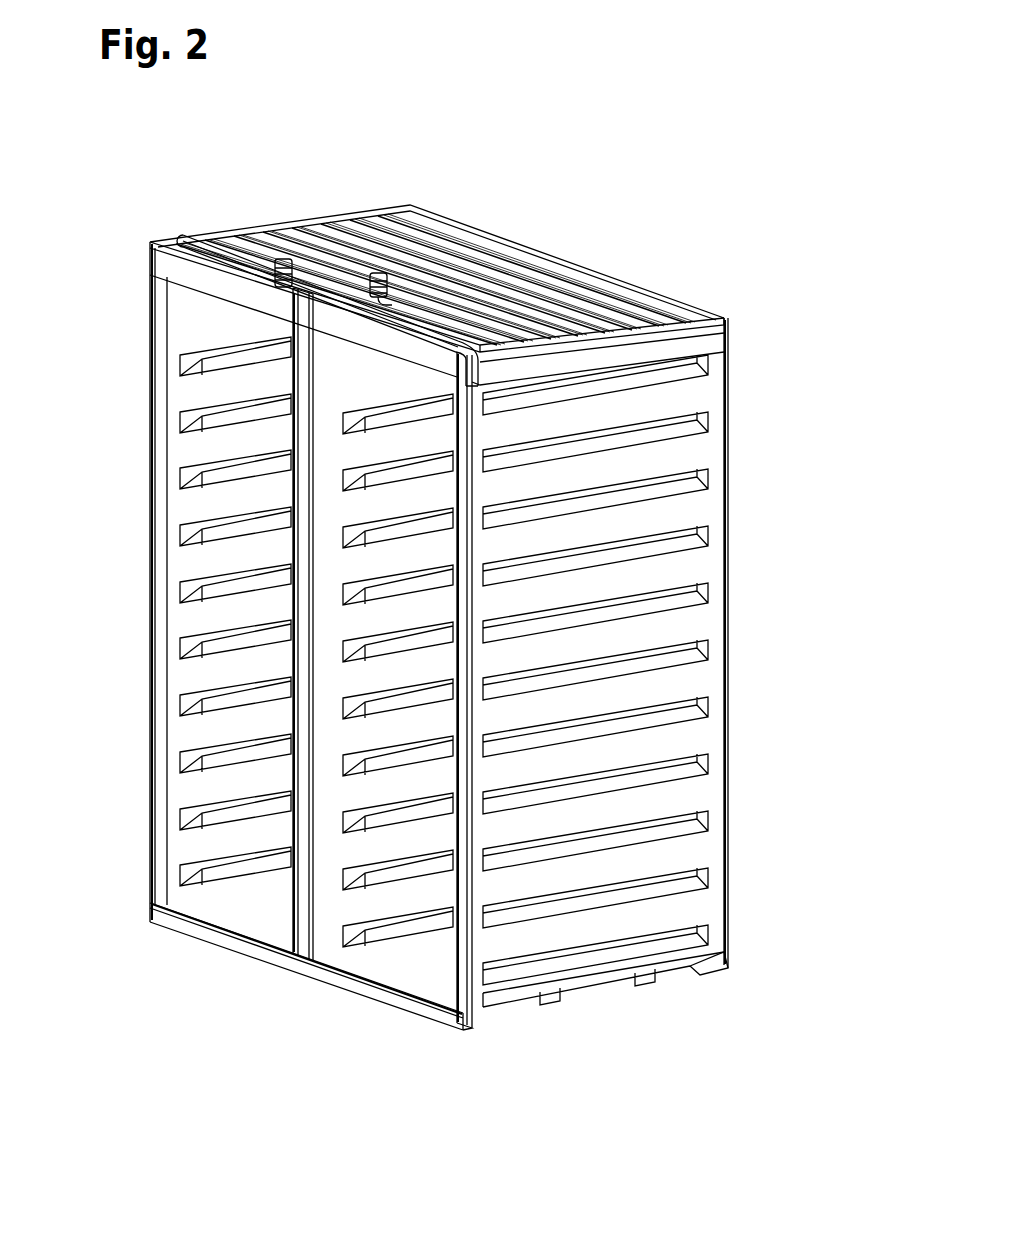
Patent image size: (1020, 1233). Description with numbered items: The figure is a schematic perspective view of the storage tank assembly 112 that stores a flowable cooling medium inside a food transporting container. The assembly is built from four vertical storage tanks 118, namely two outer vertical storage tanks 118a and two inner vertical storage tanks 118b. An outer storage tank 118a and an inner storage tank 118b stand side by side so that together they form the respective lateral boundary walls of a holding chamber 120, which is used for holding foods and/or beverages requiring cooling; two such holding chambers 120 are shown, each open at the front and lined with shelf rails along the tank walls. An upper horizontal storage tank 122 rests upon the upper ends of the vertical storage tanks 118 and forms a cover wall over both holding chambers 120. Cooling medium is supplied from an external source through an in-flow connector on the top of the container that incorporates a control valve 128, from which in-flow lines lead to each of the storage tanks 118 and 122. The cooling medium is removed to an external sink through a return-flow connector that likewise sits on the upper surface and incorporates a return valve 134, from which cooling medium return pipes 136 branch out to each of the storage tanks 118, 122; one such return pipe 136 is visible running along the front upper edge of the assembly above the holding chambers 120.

The storage tank assembly 112 is at (441, 607).
The vertical storage tanks 118 is at (160, 497).
The outer vertical storage tank 118a is at (157, 568).
The inner vertical storage tank 118b is at (277, 908).
The holding chamber 120 is at (214, 328).
The upper horizontal storage tank 122 is at (505, 282).
The control valve 128 is at (283, 257).
The return valve 134 is at (376, 272).
The cooling medium return pipes 136 is at (420, 322).